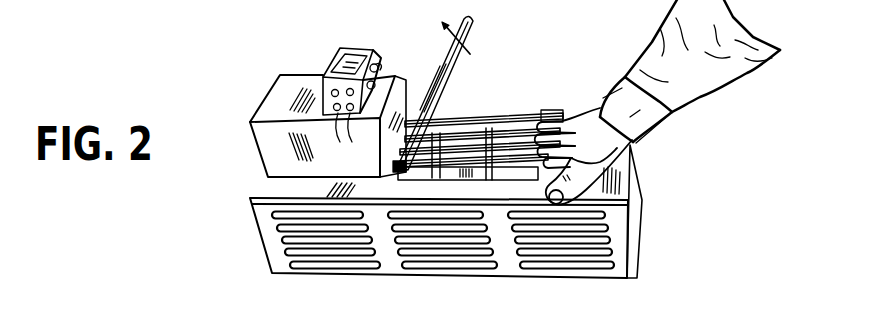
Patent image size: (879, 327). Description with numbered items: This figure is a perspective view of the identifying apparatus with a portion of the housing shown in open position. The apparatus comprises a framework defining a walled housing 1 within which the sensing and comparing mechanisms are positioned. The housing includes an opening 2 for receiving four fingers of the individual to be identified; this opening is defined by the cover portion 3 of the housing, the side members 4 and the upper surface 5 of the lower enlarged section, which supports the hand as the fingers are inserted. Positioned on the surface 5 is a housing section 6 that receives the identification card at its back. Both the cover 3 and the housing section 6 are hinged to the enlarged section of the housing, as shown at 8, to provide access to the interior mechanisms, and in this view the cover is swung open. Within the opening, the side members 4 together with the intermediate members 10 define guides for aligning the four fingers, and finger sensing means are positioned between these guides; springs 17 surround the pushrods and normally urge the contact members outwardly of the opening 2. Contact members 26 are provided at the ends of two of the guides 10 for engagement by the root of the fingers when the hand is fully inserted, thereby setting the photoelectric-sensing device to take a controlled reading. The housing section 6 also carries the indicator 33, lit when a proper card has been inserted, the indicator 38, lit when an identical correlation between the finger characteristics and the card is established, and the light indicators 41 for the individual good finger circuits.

The housing 1 is at (498, 70).
The opening 2 is at (472, 31).
The cover portion 3 is at (436, 90).
The side members 4 is at (540, 110).
The upper surface 5 is at (613, 178).
The housing section 6 is at (278, 158).
The hinge 8 is at (392, 163).
The intermediate members 10 is at (512, 114).
The springs 17 is at (464, 118).
The contact members 26 is at (568, 139).
The indicator 33 is at (356, 72).
The indicator 38 is at (378, 80).
The light indicators 41 is at (350, 118).